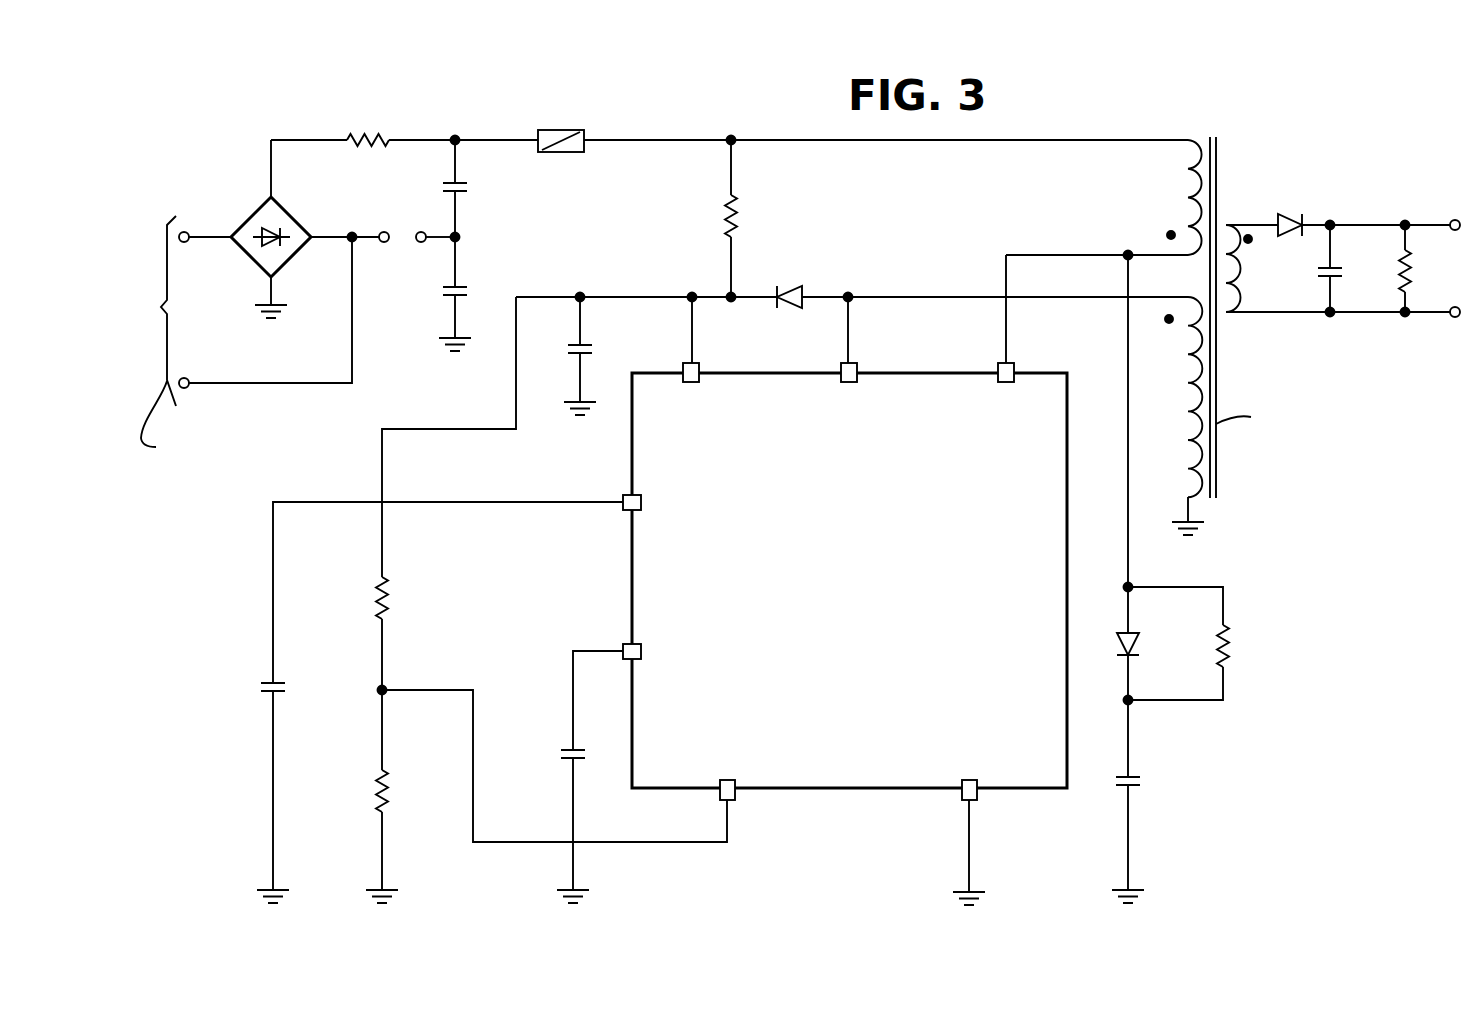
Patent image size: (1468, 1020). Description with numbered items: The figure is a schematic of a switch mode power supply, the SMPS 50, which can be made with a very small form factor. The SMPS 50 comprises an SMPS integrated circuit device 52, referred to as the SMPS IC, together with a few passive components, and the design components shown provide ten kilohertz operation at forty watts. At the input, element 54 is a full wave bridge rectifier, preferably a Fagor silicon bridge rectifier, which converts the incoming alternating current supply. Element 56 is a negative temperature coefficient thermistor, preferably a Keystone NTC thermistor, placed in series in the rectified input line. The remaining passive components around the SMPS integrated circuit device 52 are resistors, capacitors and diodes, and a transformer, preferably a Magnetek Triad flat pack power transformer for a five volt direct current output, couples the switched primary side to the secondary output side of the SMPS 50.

The SMPS 50 is at (1298, 745).
The SMPS integrated circuit device 52 is at (831, 763).
The full wave bridge rectifier 54 is at (259, 214).
The negative temperature coefficient thermistor 56 is at (558, 130).